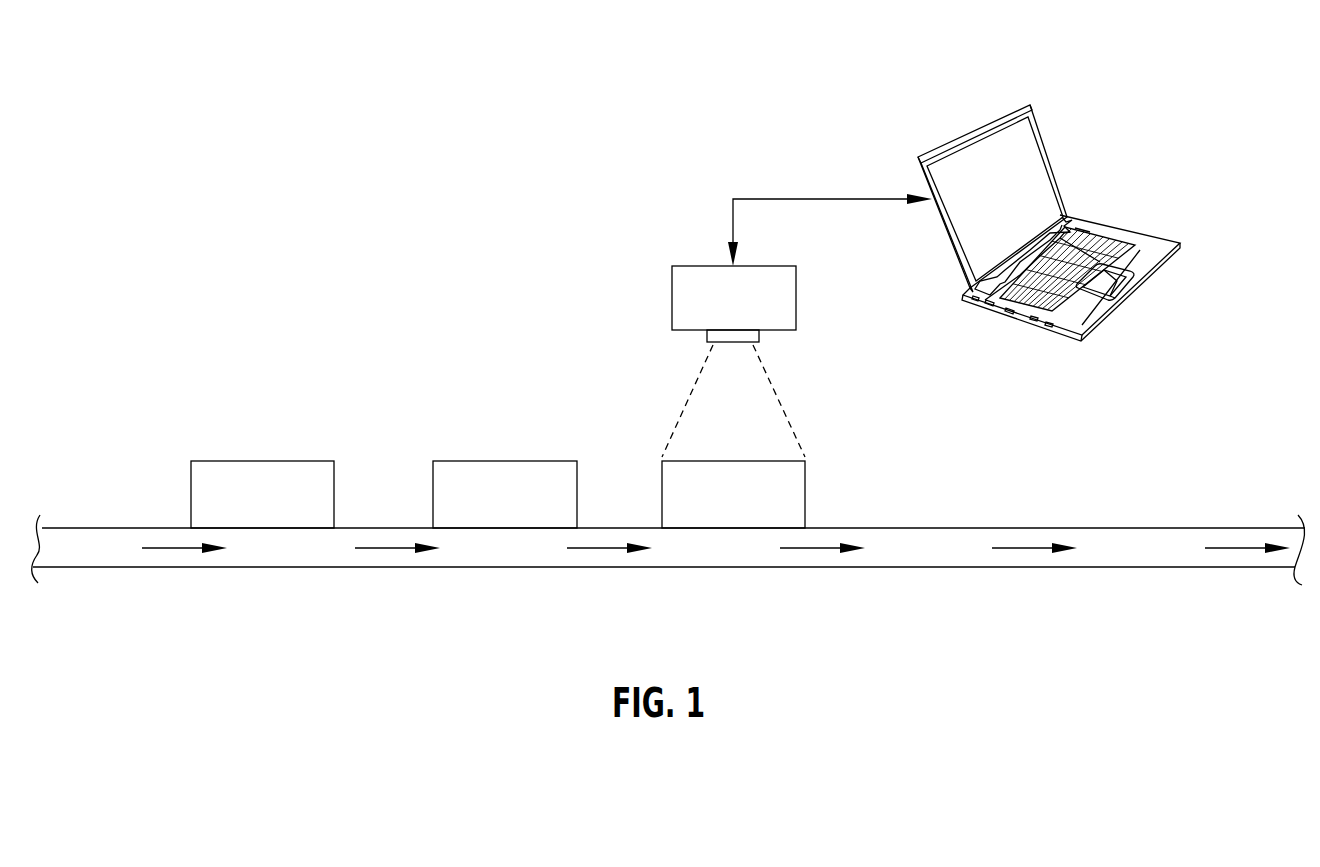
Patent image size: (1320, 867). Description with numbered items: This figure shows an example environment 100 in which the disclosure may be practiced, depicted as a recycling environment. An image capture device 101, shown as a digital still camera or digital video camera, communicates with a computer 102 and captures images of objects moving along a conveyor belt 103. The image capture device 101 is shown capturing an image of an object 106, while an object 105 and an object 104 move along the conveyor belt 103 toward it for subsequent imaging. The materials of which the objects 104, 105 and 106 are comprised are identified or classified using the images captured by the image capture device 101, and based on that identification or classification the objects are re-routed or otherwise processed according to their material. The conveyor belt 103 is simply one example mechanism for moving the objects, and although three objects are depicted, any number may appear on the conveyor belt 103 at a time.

The inspection system 100 is at (1196, 146).
The image capture device 101 is at (682, 265).
The computer 102 is at (1000, 113).
The conveyor belt 103 is at (62, 528).
The object 104 is at (336, 465).
The object 105 is at (578, 465).
The object 106 is at (806, 465).